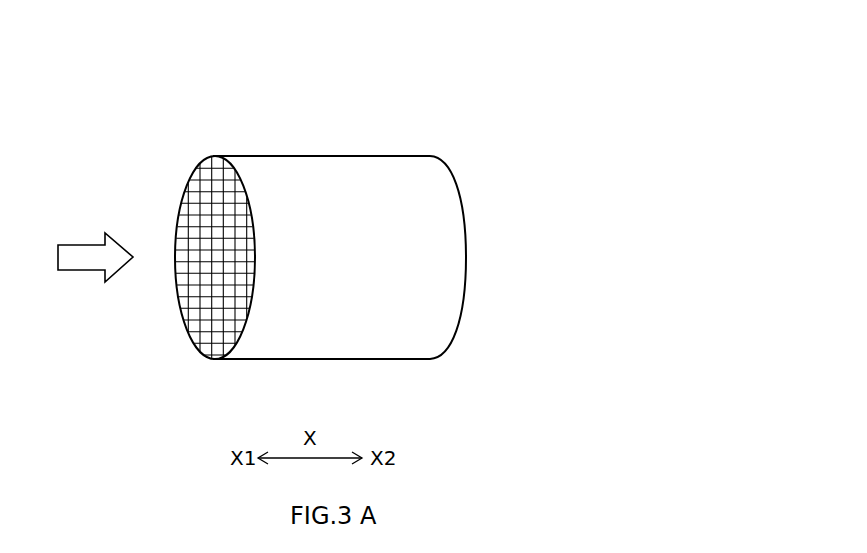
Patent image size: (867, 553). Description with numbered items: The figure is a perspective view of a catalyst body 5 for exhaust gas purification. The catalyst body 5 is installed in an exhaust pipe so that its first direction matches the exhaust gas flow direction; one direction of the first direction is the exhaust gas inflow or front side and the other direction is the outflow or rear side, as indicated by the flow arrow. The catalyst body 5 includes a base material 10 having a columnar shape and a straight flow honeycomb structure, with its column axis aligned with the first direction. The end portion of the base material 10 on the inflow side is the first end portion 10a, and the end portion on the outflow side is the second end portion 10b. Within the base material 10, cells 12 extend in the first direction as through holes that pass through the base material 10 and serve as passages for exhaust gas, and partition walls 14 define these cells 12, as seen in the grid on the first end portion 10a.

The catalyst body 5 is at (493, 108).
The base material 10 is at (352, 165).
The first end portion 10a is at (208, 156).
The second end portion 10b is at (440, 162).
The cells 12 is at (207, 253).
The partition walls 14 is at (223, 297).